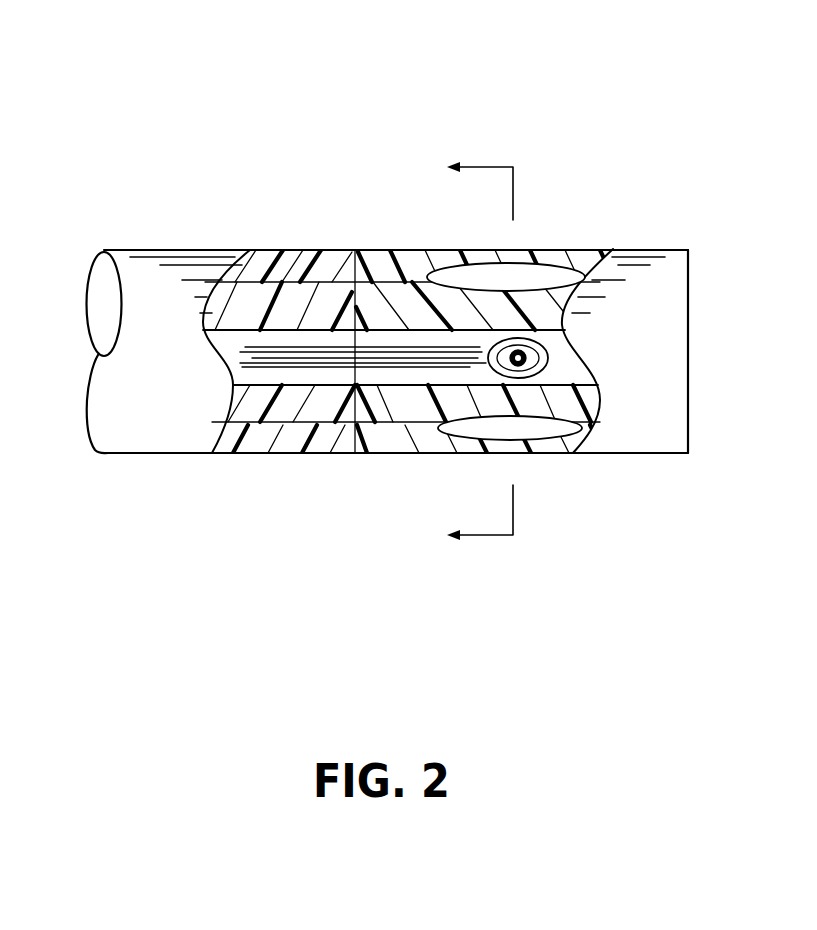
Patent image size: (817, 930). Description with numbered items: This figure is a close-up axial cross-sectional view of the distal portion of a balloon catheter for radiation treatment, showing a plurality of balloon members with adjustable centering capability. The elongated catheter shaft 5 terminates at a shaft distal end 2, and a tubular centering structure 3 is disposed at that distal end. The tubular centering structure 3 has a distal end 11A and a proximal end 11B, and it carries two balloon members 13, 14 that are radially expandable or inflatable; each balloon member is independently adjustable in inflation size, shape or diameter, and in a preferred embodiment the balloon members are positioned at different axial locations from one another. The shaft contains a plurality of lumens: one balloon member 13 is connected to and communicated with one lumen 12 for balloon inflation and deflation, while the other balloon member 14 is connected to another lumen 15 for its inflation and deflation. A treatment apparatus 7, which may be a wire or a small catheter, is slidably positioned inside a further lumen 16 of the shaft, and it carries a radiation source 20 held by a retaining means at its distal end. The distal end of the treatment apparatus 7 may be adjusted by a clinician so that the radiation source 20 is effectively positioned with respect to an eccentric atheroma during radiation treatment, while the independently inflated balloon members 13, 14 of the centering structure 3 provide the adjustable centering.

The shaft distal end 2 is at (350, 245).
The tubular centering structure 3 is at (568, 234).
The elongated catheter shaft 5 is at (190, 243).
The treatment apparatus 7 is at (270, 362).
The distal end 11A is at (695, 240).
The proximal end 11B is at (352, 460).
The lumen 12 is at (322, 253).
The balloon member 13 is at (405, 250).
The balloon member 14 is at (460, 432).
The lumen 15 is at (403, 425).
The lumen 16 is at (313, 372).
The radiation source 20 is at (530, 372).